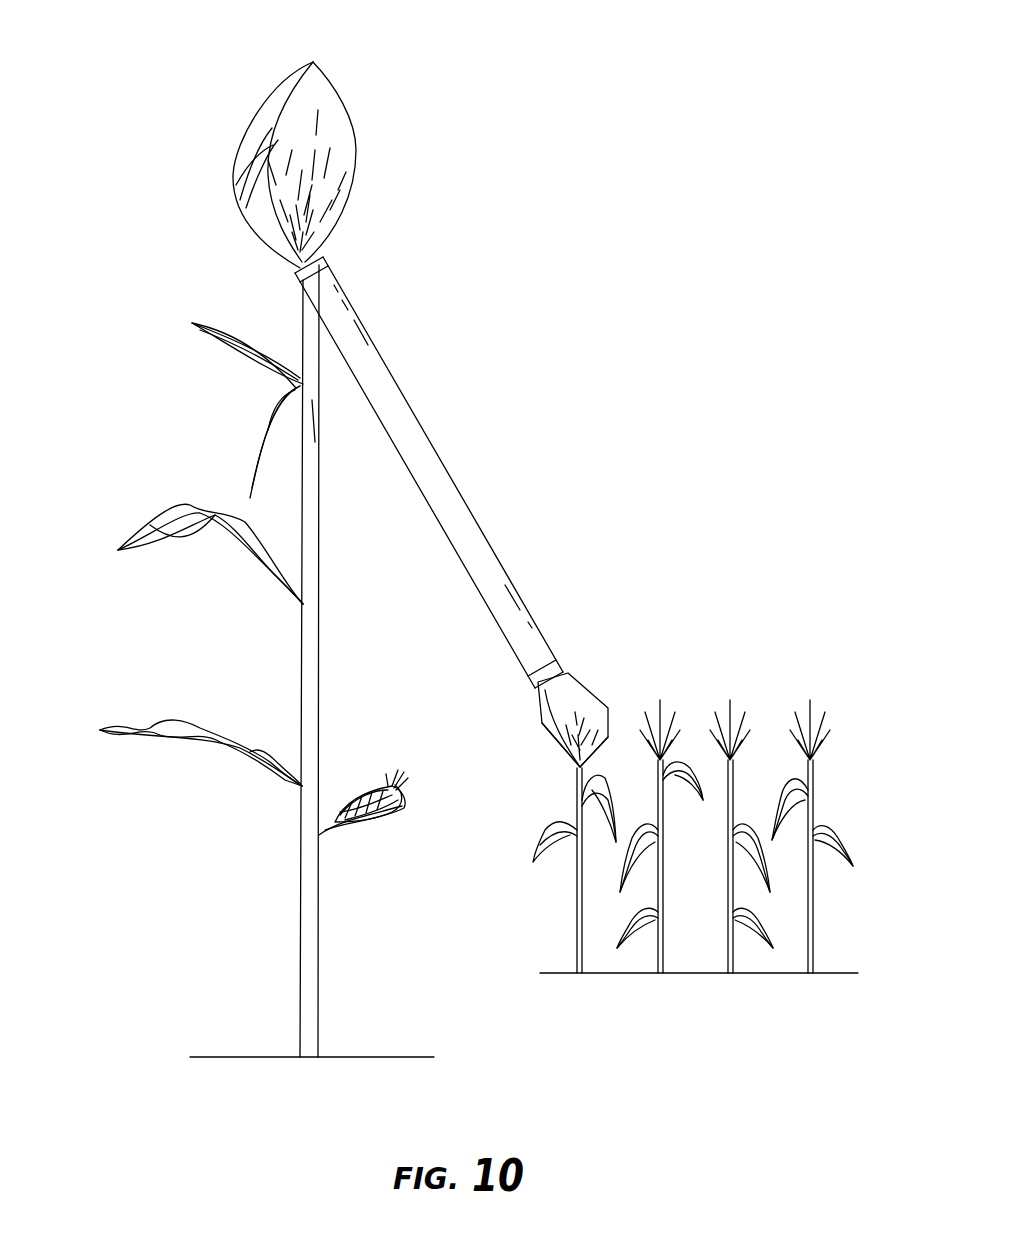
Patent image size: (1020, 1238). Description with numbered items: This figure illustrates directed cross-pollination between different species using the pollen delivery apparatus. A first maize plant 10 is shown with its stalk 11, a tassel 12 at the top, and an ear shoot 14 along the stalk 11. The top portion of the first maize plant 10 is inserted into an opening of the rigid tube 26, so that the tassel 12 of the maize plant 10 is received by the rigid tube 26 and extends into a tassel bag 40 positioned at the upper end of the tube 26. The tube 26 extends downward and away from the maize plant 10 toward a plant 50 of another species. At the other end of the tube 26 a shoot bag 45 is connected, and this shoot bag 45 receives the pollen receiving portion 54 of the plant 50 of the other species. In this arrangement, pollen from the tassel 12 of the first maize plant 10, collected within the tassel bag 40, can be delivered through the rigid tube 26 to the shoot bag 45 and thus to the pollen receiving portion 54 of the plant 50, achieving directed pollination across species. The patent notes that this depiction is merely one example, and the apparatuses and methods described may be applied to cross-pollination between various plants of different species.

The maize plant 10 is at (170, 242).
The stalk 11 is at (178, 838).
The tassel 12 is at (344, 142).
The ear shoot 14 is at (395, 815).
The rigid tube 26 is at (405, 430).
The tassel bag 40 is at (330, 80).
The shoot bag 45 is at (565, 755).
The plant of another species 50 is at (787, 656).
The pollen receiving portion 54 is at (606, 700).